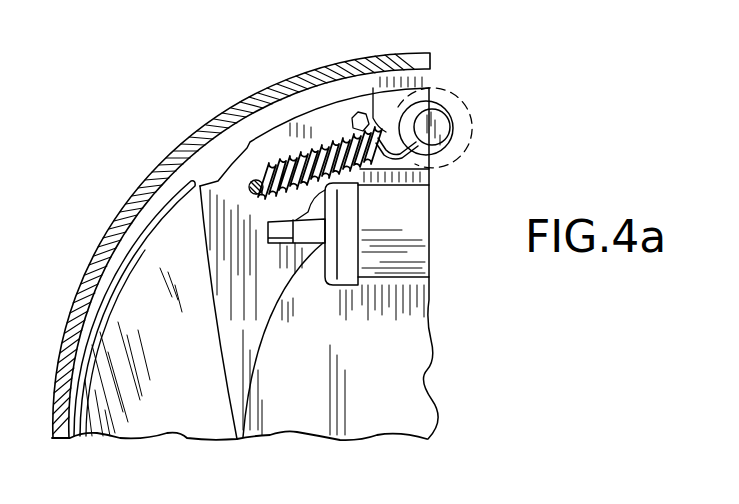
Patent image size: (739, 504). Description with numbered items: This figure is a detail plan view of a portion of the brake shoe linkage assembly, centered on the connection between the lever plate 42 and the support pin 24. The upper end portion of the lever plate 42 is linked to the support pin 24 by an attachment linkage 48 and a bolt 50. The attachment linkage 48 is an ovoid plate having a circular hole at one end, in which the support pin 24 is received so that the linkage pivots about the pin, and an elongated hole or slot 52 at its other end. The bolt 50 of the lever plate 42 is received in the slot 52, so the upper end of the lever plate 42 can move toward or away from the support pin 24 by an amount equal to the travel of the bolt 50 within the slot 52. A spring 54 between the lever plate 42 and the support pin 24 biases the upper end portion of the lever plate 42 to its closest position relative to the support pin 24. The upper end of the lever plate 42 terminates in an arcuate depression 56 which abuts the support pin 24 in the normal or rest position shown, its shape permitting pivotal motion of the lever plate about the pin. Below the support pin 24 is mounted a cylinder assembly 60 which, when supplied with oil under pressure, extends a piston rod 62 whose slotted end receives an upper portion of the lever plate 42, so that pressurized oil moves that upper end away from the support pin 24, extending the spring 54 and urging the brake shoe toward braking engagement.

The support pin 24 is at (433, 128).
The lever plate 42 is at (218, 181).
The attachment linkage 48 is at (456, 110).
The bolt 50 is at (366, 116).
The slot 52 is at (354, 124).
The spring 54 is at (262, 182).
The arcuate depression 56 is at (418, 100).
The cylinder assembly 60 is at (408, 212).
The piston rod 62 is at (310, 232).